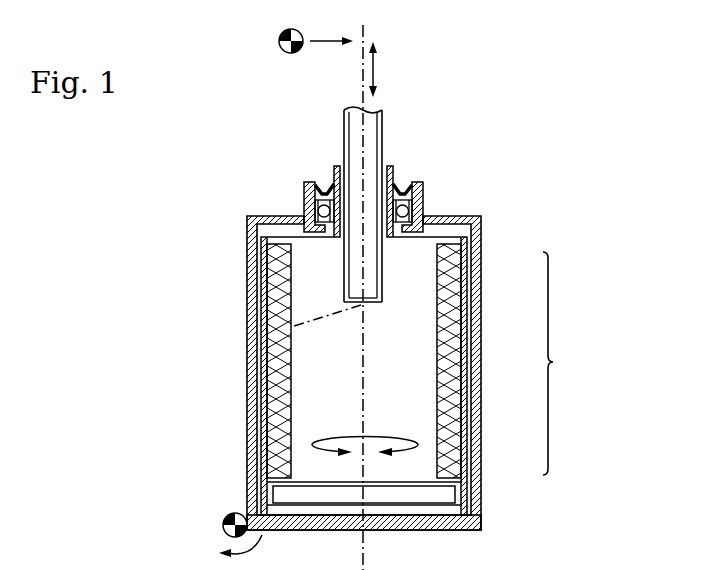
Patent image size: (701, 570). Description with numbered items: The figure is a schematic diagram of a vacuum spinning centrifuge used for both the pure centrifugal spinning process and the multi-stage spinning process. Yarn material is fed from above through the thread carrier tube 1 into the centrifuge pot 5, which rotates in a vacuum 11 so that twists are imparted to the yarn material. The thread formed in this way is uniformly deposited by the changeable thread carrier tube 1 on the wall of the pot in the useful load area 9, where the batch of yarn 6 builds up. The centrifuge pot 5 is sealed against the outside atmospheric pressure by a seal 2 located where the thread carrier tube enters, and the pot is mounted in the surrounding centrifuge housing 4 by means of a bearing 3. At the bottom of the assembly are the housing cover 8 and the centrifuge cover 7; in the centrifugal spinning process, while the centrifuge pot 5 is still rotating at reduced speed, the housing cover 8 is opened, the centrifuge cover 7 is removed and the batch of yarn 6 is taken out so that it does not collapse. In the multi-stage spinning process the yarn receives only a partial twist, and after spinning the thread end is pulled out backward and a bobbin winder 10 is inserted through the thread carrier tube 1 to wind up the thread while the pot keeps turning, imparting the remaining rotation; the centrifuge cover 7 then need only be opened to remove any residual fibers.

The thread carrier tube 1 is at (383, 127).
The seal 2 is at (400, 190).
The bearing 3 is at (306, 199).
The centrifuge housing 4 is at (480, 300).
The centrifuge pot 5 is at (445, 233).
The batch of yarn 6 is at (287, 352).
The centrifuge cover 7 is at (377, 505).
The housing cover 8 is at (308, 525).
The useful load area 9 is at (559, 363).
The bobbin winder 10 is at (283, 55).
The vacuum 11 is at (442, 510).